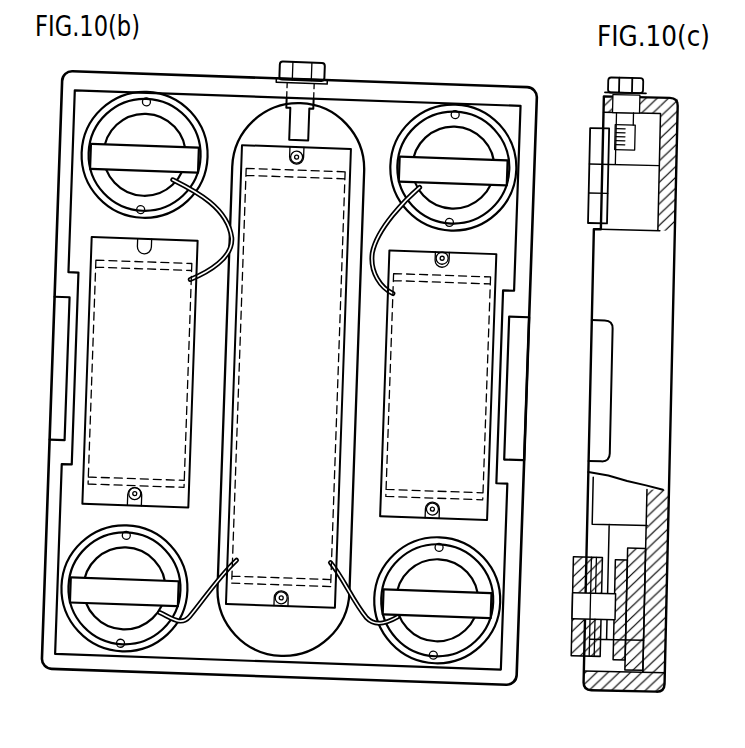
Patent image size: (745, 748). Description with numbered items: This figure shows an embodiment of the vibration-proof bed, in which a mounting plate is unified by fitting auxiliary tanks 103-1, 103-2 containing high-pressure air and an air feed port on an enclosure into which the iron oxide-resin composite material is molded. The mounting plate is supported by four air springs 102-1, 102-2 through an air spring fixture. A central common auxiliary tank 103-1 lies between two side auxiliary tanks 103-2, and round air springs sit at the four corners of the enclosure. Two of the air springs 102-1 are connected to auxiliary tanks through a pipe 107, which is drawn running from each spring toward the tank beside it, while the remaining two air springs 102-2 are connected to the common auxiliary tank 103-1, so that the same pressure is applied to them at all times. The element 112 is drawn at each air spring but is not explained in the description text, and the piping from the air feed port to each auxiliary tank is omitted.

The air spring 102-1 is at (140, 133).
The air spring 102-2 is at (140, 620).
The auxiliary tank 103-1 is at (333, 161).
The auxiliary tank 103-2 is at (477, 290).
The pipe 107 is at (221, 215).
The battery holder 112 is at (84, 145).